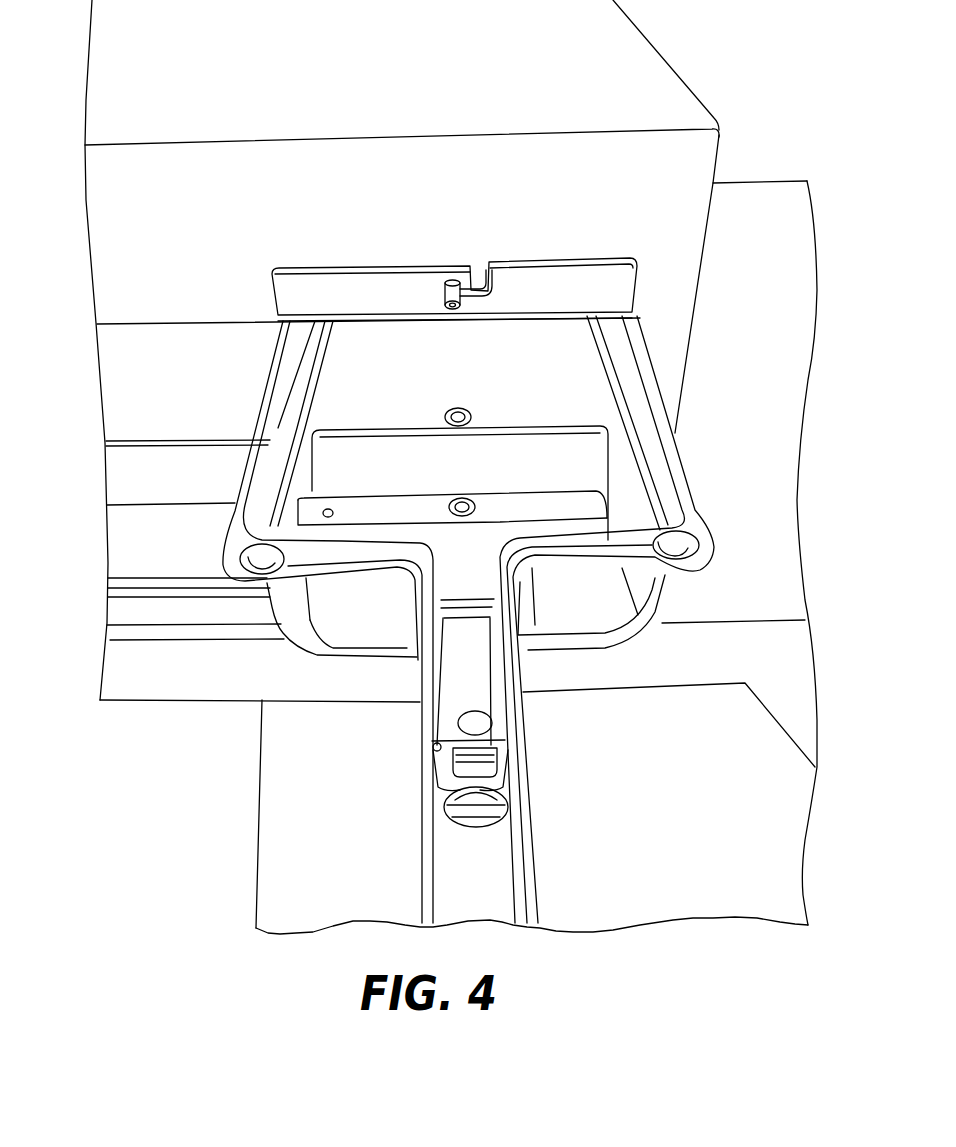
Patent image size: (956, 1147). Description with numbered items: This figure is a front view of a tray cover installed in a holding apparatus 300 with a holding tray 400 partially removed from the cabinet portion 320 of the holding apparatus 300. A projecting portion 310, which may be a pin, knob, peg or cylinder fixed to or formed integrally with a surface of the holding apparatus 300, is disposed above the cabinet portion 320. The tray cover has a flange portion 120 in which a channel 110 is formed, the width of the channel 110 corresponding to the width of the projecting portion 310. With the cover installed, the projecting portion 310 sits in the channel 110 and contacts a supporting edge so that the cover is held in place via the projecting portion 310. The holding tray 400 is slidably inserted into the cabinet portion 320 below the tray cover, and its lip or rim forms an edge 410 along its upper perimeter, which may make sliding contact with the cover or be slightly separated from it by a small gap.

The holding apparatus 300 is at (180, 127).
The projecting portion 310 is at (408, 136).
The cabinet portion 320 is at (137, 373).
The flange portion 120 is at (570, 258).
The channel 110 is at (482, 289).
The edge 410 is at (234, 524).
The holding tray 400 is at (305, 620).